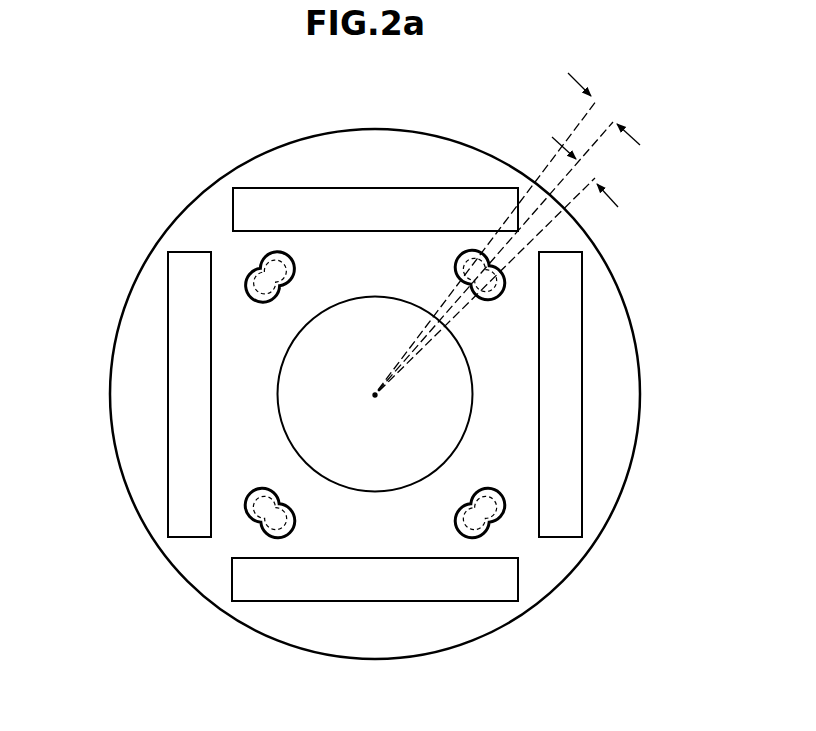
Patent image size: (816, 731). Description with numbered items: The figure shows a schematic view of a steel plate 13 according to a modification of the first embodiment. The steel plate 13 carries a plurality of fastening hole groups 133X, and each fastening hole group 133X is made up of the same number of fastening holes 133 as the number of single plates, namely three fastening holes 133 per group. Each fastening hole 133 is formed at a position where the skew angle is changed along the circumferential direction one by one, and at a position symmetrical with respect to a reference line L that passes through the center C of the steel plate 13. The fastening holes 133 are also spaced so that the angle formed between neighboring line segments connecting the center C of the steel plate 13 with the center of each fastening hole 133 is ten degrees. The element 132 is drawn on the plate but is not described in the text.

The steel plate 13 is at (165, 167).
The magnets 132 is at (167, 395).
The fastening hole 133 is at (281, 248).
The fastening hole group 133X is at (243, 300).
The center of the steel plate C is at (375, 394).
The reference line L is at (556, 187).